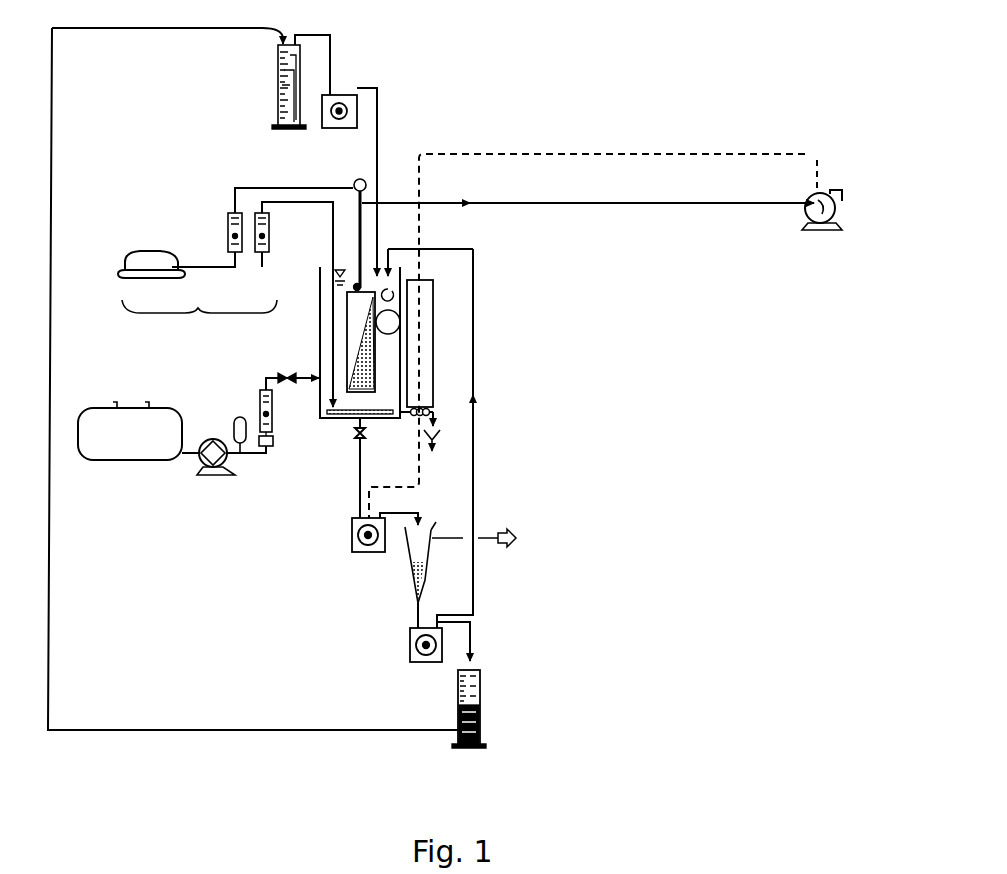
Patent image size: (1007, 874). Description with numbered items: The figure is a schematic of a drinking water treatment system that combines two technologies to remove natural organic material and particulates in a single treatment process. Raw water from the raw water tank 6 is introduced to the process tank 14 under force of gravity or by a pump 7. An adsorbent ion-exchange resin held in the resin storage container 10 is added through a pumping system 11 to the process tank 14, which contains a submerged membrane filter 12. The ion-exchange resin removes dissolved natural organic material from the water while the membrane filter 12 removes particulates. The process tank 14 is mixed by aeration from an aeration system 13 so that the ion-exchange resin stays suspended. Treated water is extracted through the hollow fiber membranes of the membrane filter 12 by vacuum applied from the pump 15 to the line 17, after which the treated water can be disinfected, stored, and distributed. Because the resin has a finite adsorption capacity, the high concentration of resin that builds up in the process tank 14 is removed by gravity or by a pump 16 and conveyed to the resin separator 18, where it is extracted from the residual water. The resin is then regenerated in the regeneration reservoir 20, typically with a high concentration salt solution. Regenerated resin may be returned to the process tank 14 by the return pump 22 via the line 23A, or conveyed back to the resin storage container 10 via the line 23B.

The raw water tank 6 is at (127, 450).
The pump 7 is at (200, 462).
The resin storage container 10 is at (278, 100).
The pumping system 11 is at (345, 98).
The submerged membrane filter 12 is at (353, 338).
The aeration system 13 is at (171, 322).
The process tank 14 is at (393, 385).
The pump 15 is at (823, 208).
The pump 16 is at (352, 533).
The line 17 is at (437, 203).
The resin separator 18 is at (415, 552).
The regeneration reservoir 20 is at (480, 718).
The return pump 22 is at (410, 640).
The line 23A is at (473, 500).
The line 23B is at (198, 731).